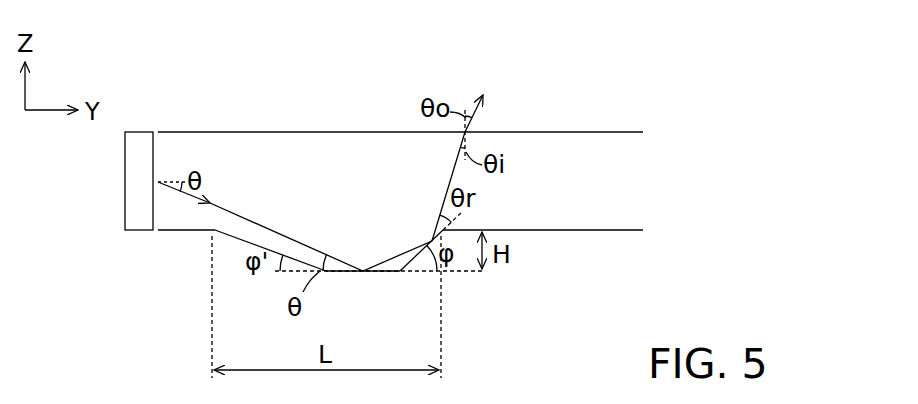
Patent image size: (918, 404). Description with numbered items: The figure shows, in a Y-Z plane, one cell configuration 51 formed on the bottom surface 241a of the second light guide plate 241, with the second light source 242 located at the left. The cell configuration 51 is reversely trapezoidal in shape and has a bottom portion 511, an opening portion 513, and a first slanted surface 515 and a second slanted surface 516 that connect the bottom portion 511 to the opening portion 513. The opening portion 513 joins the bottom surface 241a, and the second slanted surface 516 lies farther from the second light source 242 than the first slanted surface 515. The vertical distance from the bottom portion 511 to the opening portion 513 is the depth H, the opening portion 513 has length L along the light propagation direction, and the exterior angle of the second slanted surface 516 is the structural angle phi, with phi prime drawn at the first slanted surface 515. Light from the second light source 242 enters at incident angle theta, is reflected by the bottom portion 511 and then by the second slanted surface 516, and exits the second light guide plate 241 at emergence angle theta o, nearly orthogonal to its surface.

The second light guide plate 241 is at (210, 145).
The bottom surface 241a is at (579, 231).
The second light source 242 is at (138, 233).
The cell configuration 51 is at (305, 277).
The bottom portion 511 is at (352, 272).
The opening portion 513 is at (281, 226).
The first slanted surface 515 is at (233, 243).
The second slanted surface 516 is at (415, 258).